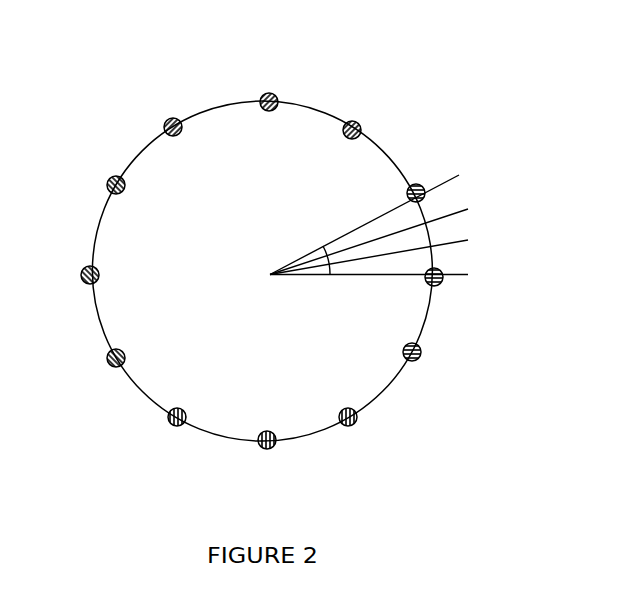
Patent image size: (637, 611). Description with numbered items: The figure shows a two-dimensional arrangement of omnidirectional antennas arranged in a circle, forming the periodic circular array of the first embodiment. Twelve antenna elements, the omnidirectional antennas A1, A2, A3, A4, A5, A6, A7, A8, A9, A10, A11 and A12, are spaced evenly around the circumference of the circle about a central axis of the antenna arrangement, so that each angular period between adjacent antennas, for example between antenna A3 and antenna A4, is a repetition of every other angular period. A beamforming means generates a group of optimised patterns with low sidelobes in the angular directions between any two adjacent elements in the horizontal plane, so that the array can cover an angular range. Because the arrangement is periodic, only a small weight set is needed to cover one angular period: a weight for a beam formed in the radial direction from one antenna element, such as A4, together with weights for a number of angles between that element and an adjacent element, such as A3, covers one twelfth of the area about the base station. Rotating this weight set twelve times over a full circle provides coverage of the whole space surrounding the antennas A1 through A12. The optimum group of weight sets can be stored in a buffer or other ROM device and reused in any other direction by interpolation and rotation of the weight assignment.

The omnidirectional antenna A1 is at (268, 90).
The omnidirectional antenna A2 is at (365, 128).
The omnidirectional antenna A3 is at (421, 183).
The omnidirectional antenna A4 is at (443, 288).
The omnidirectional antenna A5 is at (425, 359).
The omnidirectional antenna A6 is at (360, 424).
The omnidirectional antenna A7 is at (278, 452).
The omnidirectional antenna A8 is at (174, 429).
The omnidirectional antenna A9 is at (106, 362).
The omnidirectional antenna A10 is at (75, 278).
The omnidirectional antenna A11 is at (102, 178).
The omnidirectional antenna A12 is at (171, 116).